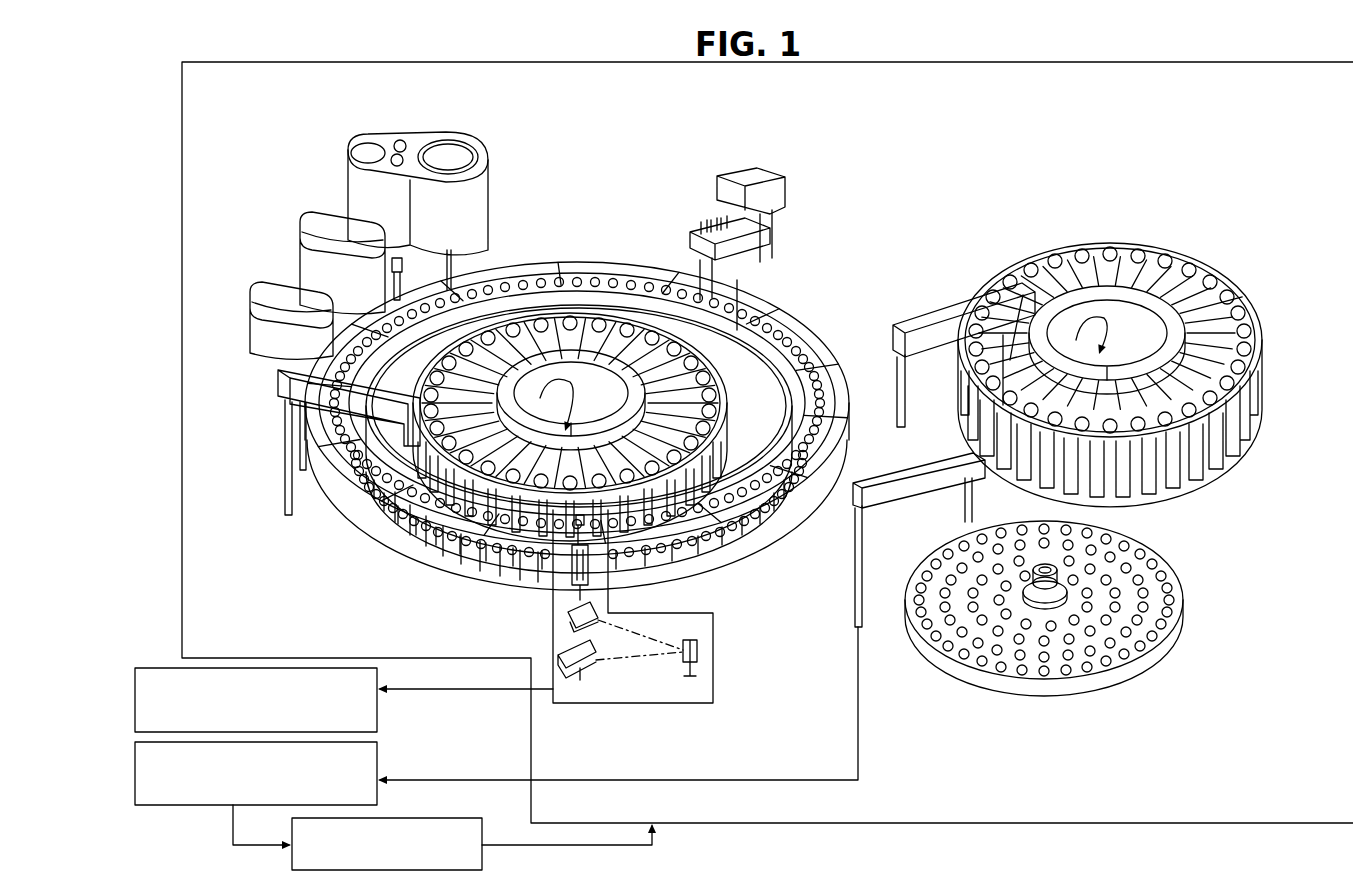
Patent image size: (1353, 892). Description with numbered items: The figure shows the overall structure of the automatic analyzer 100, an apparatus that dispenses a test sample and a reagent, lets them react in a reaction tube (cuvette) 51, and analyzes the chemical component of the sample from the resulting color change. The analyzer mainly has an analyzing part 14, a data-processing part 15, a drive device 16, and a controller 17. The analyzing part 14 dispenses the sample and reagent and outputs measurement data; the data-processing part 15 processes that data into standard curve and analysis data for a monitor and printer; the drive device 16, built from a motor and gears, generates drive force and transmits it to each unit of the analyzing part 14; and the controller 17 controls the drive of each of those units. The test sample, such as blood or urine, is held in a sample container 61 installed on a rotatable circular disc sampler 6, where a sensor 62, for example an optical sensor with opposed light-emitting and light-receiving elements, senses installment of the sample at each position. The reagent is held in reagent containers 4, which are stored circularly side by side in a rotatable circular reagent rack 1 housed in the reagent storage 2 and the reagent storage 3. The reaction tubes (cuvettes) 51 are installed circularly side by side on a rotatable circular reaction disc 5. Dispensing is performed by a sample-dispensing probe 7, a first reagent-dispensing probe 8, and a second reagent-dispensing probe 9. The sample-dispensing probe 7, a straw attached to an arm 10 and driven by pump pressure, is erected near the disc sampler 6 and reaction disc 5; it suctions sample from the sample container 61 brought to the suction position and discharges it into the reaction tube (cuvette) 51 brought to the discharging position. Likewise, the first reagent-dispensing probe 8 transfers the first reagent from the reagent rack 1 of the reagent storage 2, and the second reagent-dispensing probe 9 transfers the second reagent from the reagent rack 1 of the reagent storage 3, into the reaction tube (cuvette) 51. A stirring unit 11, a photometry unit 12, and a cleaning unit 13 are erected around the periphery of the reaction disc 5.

The reagent rack 1 is at (1094, 322).
The reagent storage 2 is at (1192, 235).
The reagent storage 3 is at (642, 315).
The reagent container 4 is at (604, 310).
The reaction disc 5 is at (780, 305).
The reaction tube (cuvette) 51 is at (712, 450).
The disc sampler 6 is at (1162, 666).
The sample container 61 is at (1000, 660).
The sensor 62 is at (1168, 566).
The sample-dispensing probe 7 is at (962, 522).
The first reagent-dispensing probe 8 is at (1023, 295).
The second reagent-dispensing probe 9 is at (412, 532).
The arm 10 is at (372, 430).
The stirring unit 11 is at (312, 185).
The photometry unit 12 is at (650, 690).
The cleaning unit 13 is at (752, 182).
The analyzing part 14 is at (213, 565).
The data-processing part 15 is at (228, 668).
The drive device 16 is at (402, 818).
The controller 17 is at (380, 760).
The automatic analyzer 100 is at (185, 808).